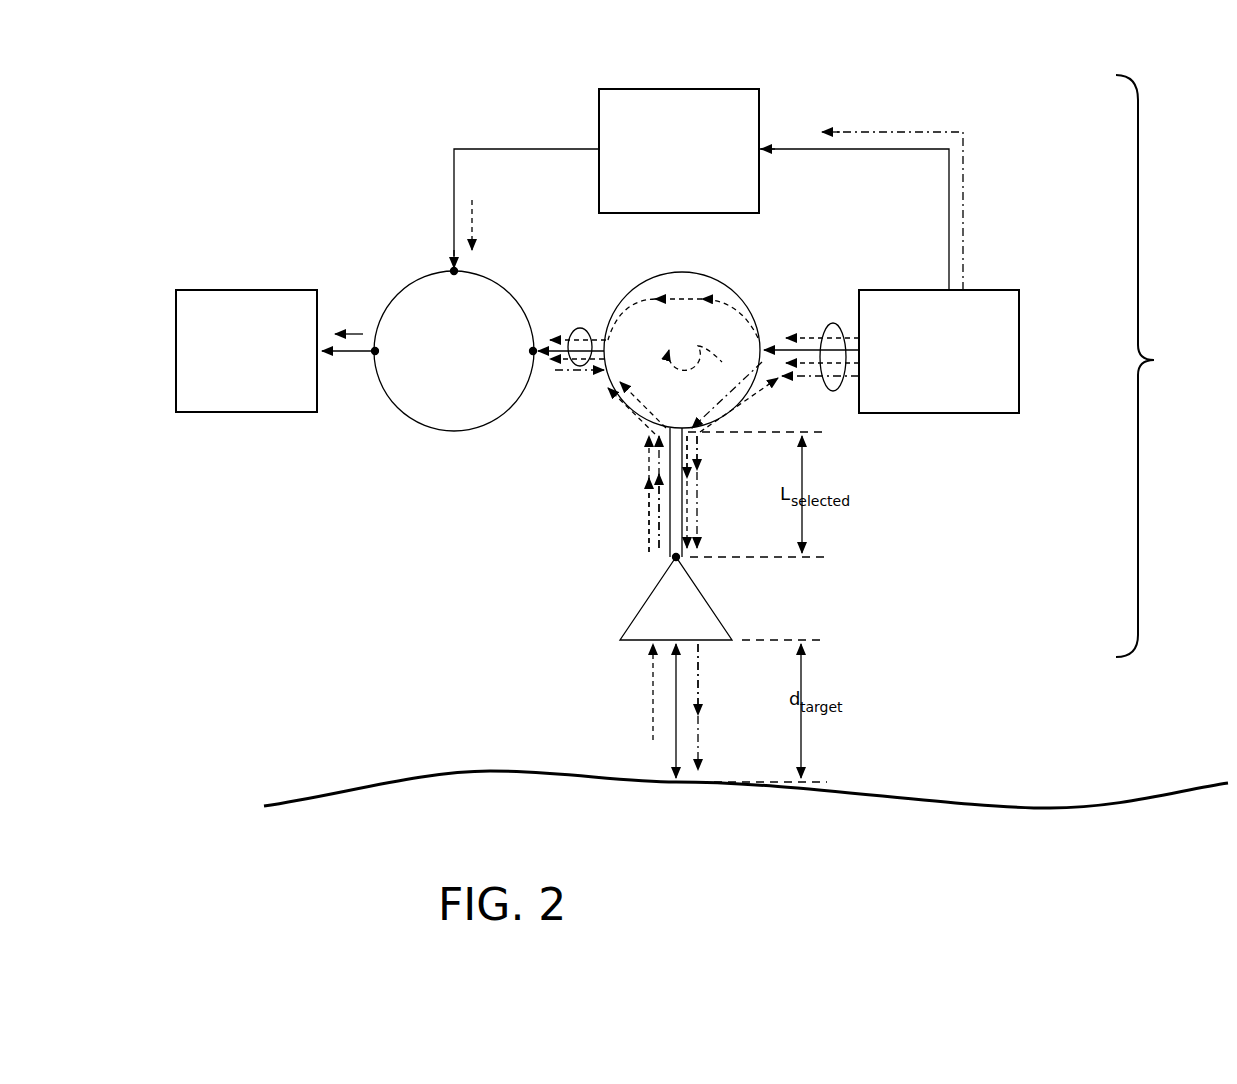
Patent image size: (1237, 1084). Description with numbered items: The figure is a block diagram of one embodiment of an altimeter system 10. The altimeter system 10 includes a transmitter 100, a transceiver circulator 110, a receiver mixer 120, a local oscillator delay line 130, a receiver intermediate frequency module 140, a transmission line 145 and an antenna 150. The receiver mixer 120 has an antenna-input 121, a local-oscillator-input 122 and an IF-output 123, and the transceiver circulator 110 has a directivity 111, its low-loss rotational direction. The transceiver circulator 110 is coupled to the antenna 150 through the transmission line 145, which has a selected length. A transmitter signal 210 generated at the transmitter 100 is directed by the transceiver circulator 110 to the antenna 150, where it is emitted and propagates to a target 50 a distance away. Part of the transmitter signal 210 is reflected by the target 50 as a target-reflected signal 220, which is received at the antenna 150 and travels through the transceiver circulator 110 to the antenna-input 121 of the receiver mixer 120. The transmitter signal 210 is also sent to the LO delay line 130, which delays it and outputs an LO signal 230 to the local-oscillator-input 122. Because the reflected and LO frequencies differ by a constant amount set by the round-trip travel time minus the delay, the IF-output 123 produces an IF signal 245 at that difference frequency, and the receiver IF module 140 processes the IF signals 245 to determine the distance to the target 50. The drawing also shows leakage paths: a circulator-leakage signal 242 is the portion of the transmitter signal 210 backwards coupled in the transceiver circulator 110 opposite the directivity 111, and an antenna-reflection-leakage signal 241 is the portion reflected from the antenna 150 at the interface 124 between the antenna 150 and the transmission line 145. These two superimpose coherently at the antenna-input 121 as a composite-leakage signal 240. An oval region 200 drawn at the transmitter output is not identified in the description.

The altimeter system 10 is at (1151, 366).
The target 50 is at (648, 866).
The transmitter 100 is at (926, 370).
The transceiver circulator 110 is at (748, 412).
The directivity 111 is at (722, 366).
The receiver mixer 120 is at (441, 386).
The antenna-input 121 is at (534, 352).
The local-oscillator-input 122 is at (450, 270).
The IF-output 123 is at (374, 352).
The interface between antenna and transmission line 124 is at (680, 560).
The local oscillator (LO) delay line 130 is at (666, 184).
The receiver intermediate frequency (IF) module 140 is at (233, 370).
The transmission line 145 is at (670, 517).
The antenna 150 is at (663, 618).
The transmitter output coupling 200 is at (833, 357).
The transmitter signal 210 is at (860, 132).
The target-reflected signal 220 is at (645, 458).
The LO signal 230 is at (475, 228).
The composite-leakage signal 240 is at (580, 328).
The antenna-reflection-leakage signal 241 is at (622, 418).
The circulator-leakage signal 242 is at (740, 322).
The IF signal 245 is at (362, 334).